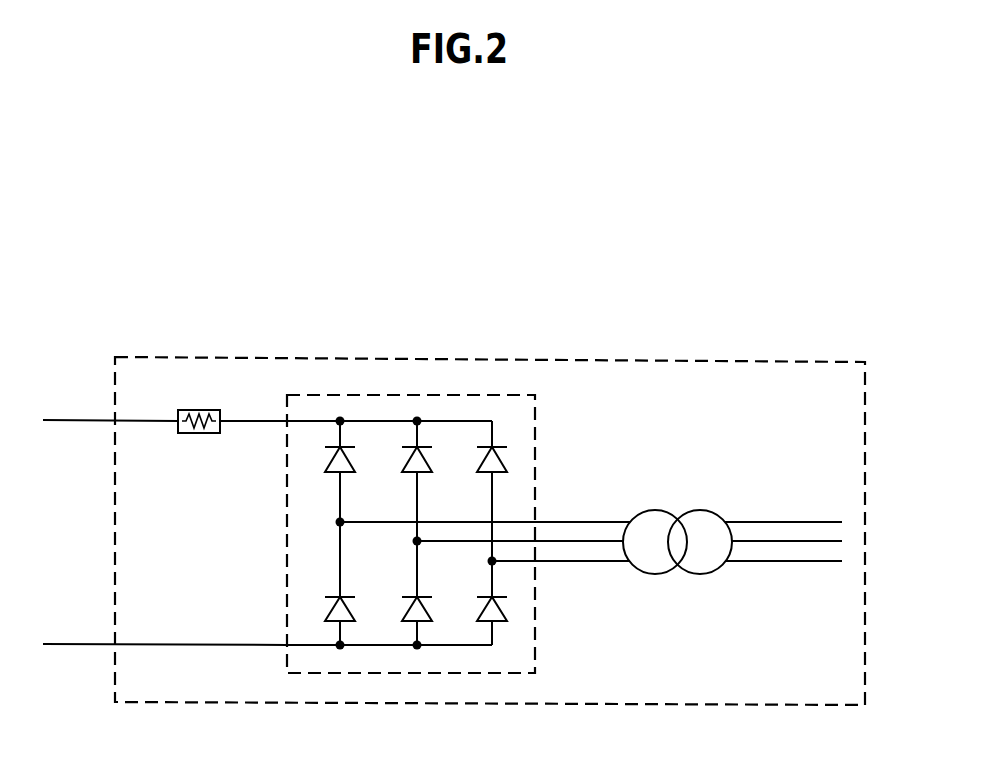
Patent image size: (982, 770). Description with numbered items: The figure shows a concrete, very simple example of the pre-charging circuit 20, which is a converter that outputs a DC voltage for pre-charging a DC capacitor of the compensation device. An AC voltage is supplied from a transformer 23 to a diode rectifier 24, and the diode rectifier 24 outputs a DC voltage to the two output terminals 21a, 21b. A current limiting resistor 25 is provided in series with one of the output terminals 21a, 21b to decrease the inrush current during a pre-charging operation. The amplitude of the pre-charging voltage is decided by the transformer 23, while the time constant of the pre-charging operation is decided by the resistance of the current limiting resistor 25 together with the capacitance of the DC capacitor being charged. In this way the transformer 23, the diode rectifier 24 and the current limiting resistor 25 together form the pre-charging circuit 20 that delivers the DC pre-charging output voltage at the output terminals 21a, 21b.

The pre-charging circuit 20 is at (836, 360).
The output terminal 21a is at (88, 392).
The output terminal 21b is at (88, 613).
The transformer 23 is at (708, 512).
The diode rectifier 24 is at (537, 425).
The current limiting resistor 25 is at (210, 410).